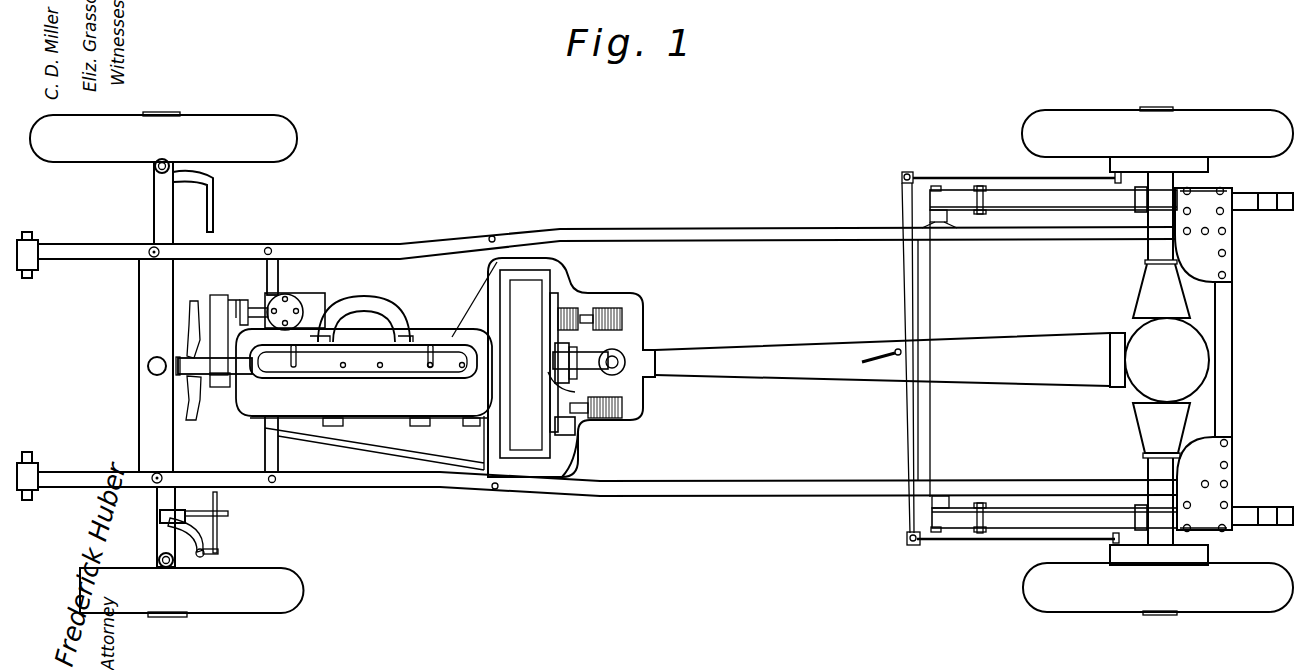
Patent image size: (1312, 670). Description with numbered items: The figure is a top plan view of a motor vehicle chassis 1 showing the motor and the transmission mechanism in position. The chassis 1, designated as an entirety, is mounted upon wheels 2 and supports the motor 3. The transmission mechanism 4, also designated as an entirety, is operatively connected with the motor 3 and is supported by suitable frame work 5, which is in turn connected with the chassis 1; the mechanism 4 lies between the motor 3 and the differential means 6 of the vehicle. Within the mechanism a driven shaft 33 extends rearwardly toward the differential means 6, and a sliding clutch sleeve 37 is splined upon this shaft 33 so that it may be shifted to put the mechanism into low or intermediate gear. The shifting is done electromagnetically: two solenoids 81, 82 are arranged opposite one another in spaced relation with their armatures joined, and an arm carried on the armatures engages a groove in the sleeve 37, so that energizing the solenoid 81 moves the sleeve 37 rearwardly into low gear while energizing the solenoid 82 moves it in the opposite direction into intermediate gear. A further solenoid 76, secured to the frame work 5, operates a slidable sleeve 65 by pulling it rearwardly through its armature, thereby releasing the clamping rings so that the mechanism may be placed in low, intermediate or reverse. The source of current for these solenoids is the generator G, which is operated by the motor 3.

The motor vehicle chassis 1 is at (703, 225).
The wheels 2 is at (1032, 128).
The motor 3 is at (358, 352).
The transmission mechanism 4 is at (542, 250).
The frame work 5 is at (582, 428).
The differential means 6 is at (1140, 340).
The driven shaft 33 is at (596, 372).
The sliding clutch sleeve 37 is at (575, 382).
The slidable sleeve 65 is at (590, 340).
The solenoid 76 is at (613, 418).
The solenoid 81 is at (623, 322).
The solenoid 82 is at (553, 318).
The generator G is at (302, 303).